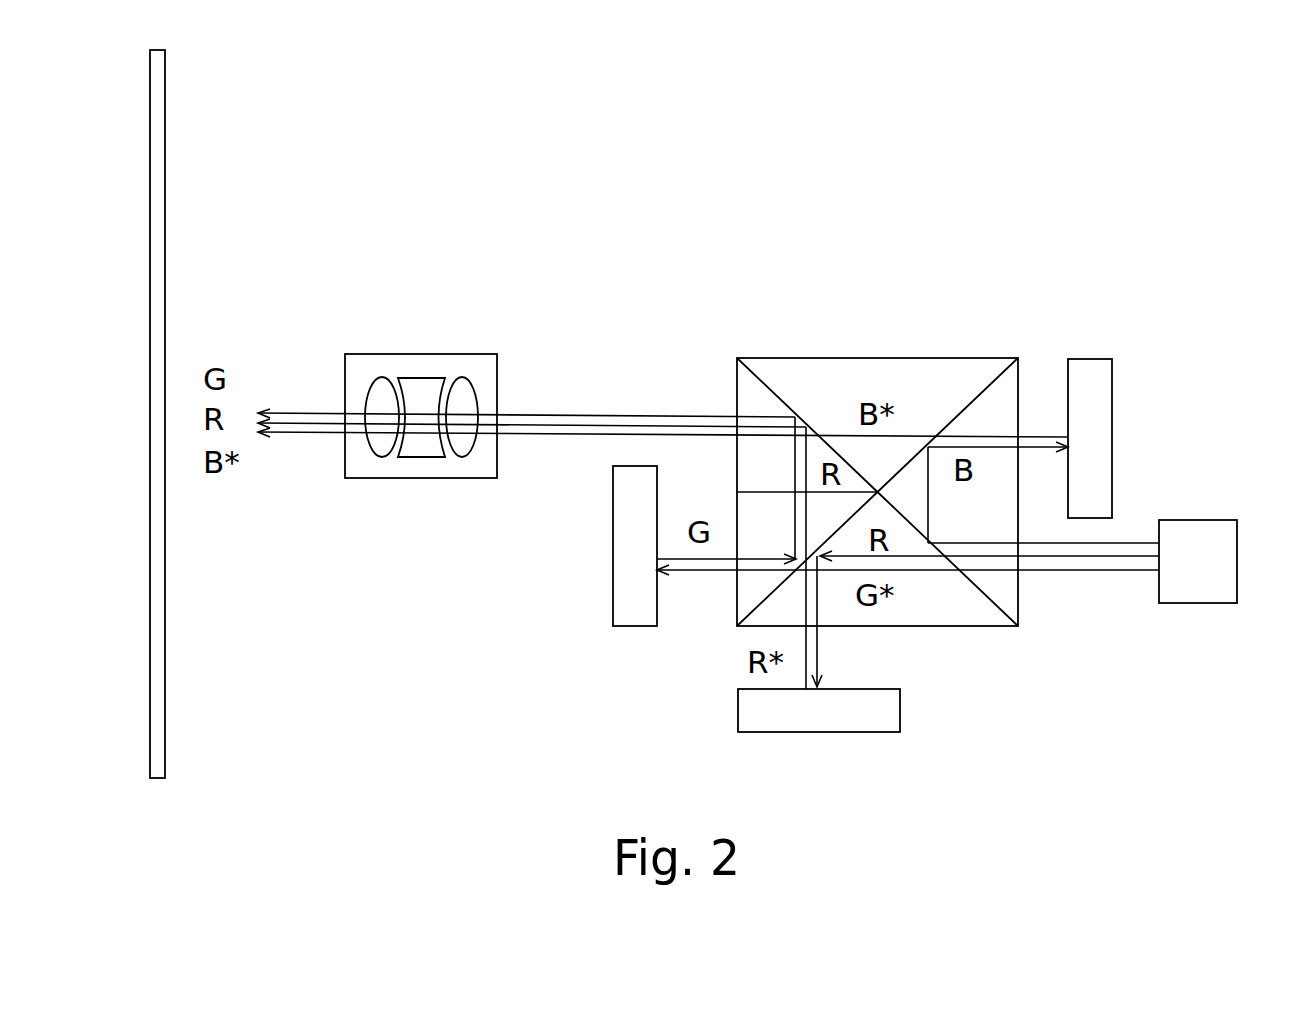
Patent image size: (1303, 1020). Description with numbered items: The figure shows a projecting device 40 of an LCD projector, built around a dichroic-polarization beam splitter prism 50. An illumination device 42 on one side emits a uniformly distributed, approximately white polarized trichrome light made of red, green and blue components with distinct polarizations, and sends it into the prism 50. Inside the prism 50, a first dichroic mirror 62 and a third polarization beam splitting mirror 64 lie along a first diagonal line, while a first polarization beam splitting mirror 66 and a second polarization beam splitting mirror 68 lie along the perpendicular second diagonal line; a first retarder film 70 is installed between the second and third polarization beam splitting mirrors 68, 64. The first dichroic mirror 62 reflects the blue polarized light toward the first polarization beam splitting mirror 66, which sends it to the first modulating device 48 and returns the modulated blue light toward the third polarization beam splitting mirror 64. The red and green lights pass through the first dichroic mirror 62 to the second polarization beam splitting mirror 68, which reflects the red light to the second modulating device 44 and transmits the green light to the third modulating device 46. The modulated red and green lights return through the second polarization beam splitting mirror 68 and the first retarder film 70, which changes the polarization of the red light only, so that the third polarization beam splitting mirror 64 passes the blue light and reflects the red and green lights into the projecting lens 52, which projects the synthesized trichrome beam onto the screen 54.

The projecting device 40 is at (992, 235).
The illumination device 42 is at (1197, 603).
The second modulating device 44 is at (900, 728).
The third modulating device 46 is at (613, 490).
The first modulating device 48 is at (1112, 418).
The dichroic-polarization beam splitter prism 50 is at (982, 358).
The projecting lens 52 is at (360, 354).
The screen 54 is at (165, 142).
The first dichroic mirror 62 is at (976, 590).
The third polarization beam splitting mirror 64 is at (765, 385).
The first polarization beam splitting mirror 66 is at (980, 394).
The second polarization beam splitting mirror 68 is at (765, 599).
The first retarder film 70 is at (767, 492).